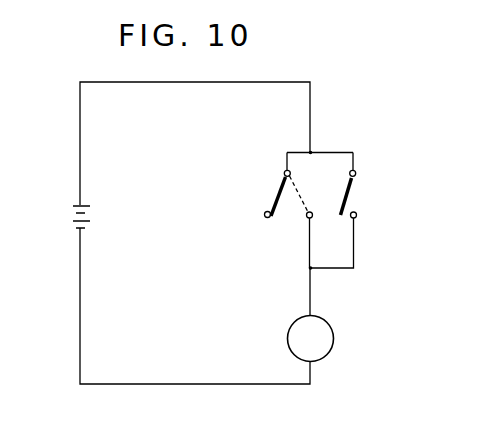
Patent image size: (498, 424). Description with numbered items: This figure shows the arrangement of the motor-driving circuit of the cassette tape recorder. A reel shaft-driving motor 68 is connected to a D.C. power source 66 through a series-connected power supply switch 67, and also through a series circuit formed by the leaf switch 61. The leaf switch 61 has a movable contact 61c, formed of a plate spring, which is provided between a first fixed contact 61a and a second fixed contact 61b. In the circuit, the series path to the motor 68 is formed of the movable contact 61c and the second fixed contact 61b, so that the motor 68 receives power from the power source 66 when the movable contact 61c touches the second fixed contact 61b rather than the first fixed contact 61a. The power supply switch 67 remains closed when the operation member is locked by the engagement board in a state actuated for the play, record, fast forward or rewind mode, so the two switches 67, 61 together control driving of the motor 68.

The leaf switch 61 is at (290, 211).
The first fixed contact 61a is at (264, 213).
The second fixed contact 61b is at (308, 218).
The movable contact 61c is at (280, 193).
The D.C. power source 66 is at (72, 222).
The power supply switch 67 is at (355, 190).
The reel shaft-driving motor 68 is at (336, 340).